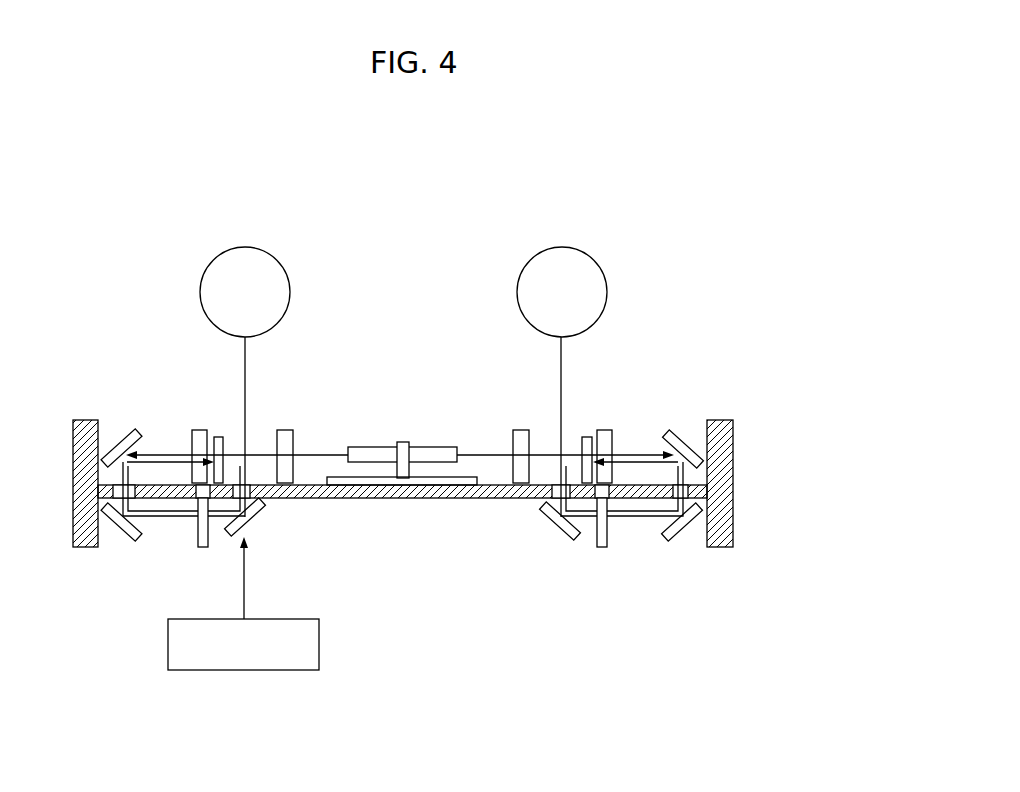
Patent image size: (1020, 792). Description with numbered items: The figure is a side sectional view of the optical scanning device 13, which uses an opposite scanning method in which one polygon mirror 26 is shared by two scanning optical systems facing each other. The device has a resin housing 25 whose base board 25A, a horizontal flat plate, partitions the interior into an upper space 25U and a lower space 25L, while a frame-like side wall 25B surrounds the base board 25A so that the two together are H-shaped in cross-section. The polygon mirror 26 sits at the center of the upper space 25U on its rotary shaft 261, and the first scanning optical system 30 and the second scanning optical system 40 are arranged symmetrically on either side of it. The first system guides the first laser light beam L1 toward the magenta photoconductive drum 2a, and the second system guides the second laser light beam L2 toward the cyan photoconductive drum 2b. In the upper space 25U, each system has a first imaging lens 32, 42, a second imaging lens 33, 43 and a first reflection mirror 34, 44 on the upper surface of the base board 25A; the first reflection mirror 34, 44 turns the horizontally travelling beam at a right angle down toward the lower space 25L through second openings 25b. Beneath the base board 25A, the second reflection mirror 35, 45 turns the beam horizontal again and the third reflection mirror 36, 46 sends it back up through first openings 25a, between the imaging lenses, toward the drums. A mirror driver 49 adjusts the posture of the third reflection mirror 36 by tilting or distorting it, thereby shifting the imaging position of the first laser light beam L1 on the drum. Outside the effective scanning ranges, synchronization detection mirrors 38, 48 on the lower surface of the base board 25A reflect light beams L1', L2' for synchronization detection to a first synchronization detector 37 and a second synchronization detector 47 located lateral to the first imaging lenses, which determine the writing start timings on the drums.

The magenta photoconductive drum 2a is at (277, 260).
The cyan photoconductive drum 2b is at (594, 260).
The optical scanning device 13 is at (650, 360).
The second scanning optical system 40 is at (661, 383).
The first scanning optical system 30 is at (148, 403).
The housing 25 is at (742, 436).
The side wall 25B is at (728, 484).
The upper space 25U is at (377, 404).
The lower space 25L is at (377, 537).
The base board 25A is at (465, 498).
The first openings 25a is at (262, 508).
The second openings 25b is at (112, 532).
The first laser light beam L1 is at (400, 427).
The light beam for synchronization detection L1' is at (184, 517).
The second laser light beam L2 is at (589, 427).
The light beam for synchronization detection L2' is at (622, 517).
The first imaging lens 32 is at (285, 430).
The second imaging lens 33 is at (197, 430).
The first reflection mirror 34 is at (118, 432).
The second reflection mirror 35 is at (124, 540).
The third reflection mirror 36 is at (260, 537).
The first synchronization detector 37 is at (218, 437).
The synchronization detection mirror 38 is at (204, 548).
The polygon mirror 26 is at (442, 447).
The rotary shaft 261 is at (403, 442).
The first imaging lens 42 is at (520, 430).
The second imaging lens 43 is at (605, 430).
The first reflection mirror 44 is at (690, 432).
The second reflection mirror 45 is at (682, 539).
The third reflection mirror 46 is at (562, 537).
The second synchronization detector 47 is at (586, 437).
The synchronization detection mirror 48 is at (603, 548).
The mirror driver 49 is at (319, 645).